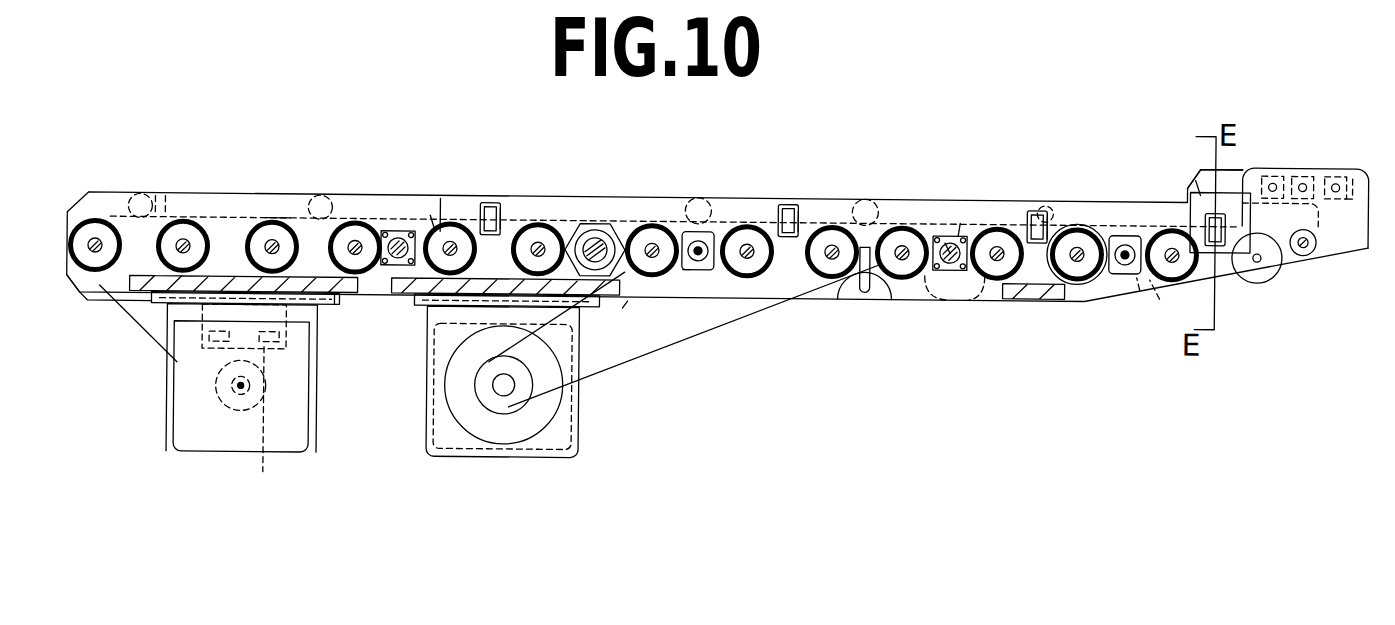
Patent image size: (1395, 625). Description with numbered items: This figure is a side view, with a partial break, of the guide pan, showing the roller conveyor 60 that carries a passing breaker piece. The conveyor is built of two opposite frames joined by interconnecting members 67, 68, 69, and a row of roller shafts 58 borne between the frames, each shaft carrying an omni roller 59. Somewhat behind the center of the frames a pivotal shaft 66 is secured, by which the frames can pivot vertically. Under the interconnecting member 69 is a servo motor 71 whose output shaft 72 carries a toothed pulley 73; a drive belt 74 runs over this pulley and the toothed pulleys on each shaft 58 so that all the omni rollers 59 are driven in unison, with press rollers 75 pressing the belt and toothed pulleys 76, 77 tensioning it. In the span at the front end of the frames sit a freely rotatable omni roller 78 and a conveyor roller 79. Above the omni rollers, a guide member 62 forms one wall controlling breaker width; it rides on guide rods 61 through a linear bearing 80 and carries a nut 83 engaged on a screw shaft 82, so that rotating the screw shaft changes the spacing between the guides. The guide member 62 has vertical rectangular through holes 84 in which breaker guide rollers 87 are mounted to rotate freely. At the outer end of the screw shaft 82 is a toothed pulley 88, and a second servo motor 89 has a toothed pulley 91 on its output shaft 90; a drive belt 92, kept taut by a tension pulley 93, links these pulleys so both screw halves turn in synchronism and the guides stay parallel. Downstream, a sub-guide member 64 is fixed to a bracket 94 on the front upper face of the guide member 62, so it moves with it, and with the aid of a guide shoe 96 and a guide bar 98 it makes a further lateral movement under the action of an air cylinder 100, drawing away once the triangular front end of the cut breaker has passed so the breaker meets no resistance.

The roller shaft 58 is at (95, 245).
The omni roller 59 is at (190, 240).
The roller conveyor 60 is at (277, 216).
The guide rod 61 is at (430, 212).
The guide member 62 is at (440, 195).
The sub-guide member 64 is at (1345, 231).
The pivotal shaft 66 is at (593, 242).
The interconnecting member 67 is at (1035, 290).
The interconnecting member 68 is at (345, 298).
The interconnecting member 69 is at (140, 293).
The servo motor 71 is at (226, 447).
The drive shaft 72 is at (265, 470).
The toothed pulley 73 is at (270, 376).
The drive belt 74 is at (162, 195).
The press roller 75 is at (140, 193).
The toothed pulley 76 is at (970, 292).
The toothed pulley 77 is at (290, 326).
The omni roller 78 is at (1260, 270).
The conveyor roller 79 is at (1303, 244).
The linear bearing 80 is at (398, 228).
The screw shaft 82 is at (707, 265).
The nut 83 is at (733, 267).
The vertical rectangular through hole 84 is at (505, 205).
The breaker guide roller 87 is at (490, 199).
The toothed pulley 88 is at (683, 264).
The servo motor 89 is at (463, 447).
The output shaft 90 is at (505, 392).
The toothed pulley 91 is at (530, 400).
The drive belt 92 is at (672, 350).
The tension pulley 93 is at (878, 292).
The bracket 94 is at (1205, 174).
The guide shoe 96 is at (1272, 165).
The cover plate 98 is at (1348, 178).
The air cylinder 100 is at (1302, 165).